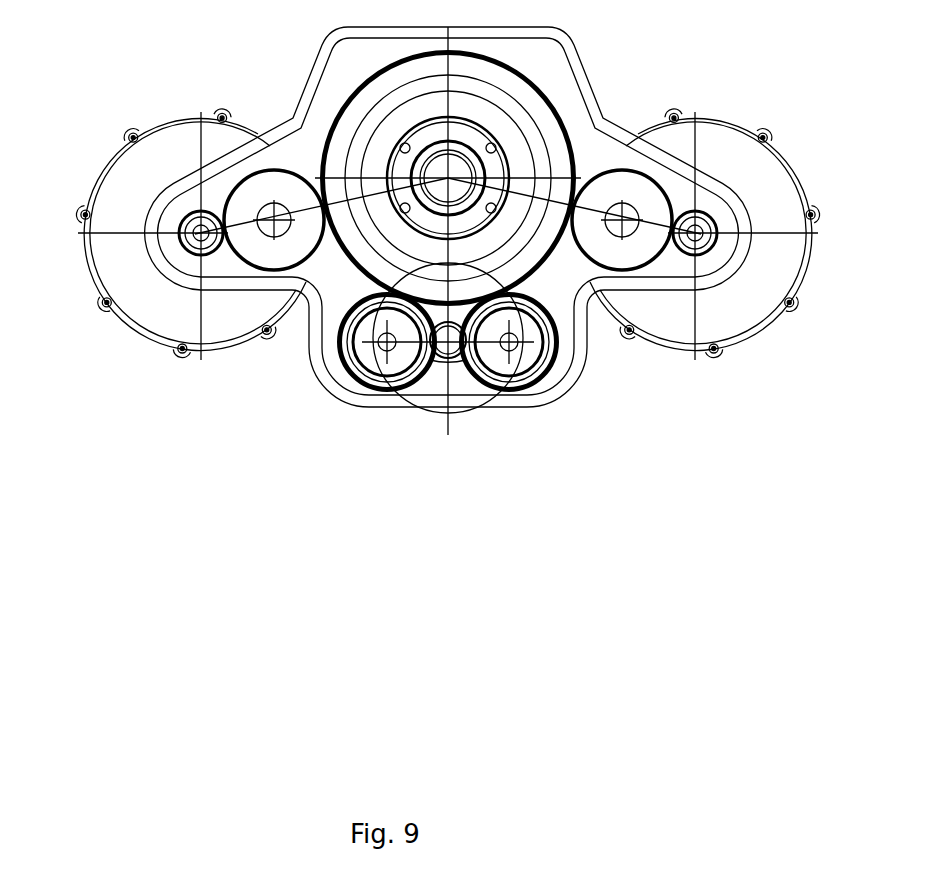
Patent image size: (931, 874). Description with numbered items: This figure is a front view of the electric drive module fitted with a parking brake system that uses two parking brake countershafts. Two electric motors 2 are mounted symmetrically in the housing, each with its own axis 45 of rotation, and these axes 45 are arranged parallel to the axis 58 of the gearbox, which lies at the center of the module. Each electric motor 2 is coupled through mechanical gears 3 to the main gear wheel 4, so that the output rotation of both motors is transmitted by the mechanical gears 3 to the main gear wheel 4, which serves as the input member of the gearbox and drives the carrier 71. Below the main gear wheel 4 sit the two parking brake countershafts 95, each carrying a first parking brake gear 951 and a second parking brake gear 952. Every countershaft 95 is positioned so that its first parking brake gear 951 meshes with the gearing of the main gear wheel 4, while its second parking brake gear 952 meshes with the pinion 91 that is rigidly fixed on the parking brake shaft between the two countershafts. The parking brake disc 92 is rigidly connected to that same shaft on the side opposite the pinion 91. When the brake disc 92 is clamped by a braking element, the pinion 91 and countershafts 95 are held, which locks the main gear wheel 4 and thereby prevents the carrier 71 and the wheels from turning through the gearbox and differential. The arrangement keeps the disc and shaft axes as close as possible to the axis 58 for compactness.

The electric motor 2 is at (103, 168).
The axis of the electric motor 45 is at (135, 140).
The mechanical gears 3 is at (198, 231).
The main gear wheel 4 is at (254, 185).
The carrier 71 is at (332, 152).
The axis of the gearbox 58 is at (455, 174).
The parking brake countershaft 95 is at (368, 374).
The first parking brake gear 951 is at (351, 381).
The second parking brake gear 952 is at (336, 345).
The pinion 91 is at (438, 358).
The parking brake disc 92 is at (462, 378).